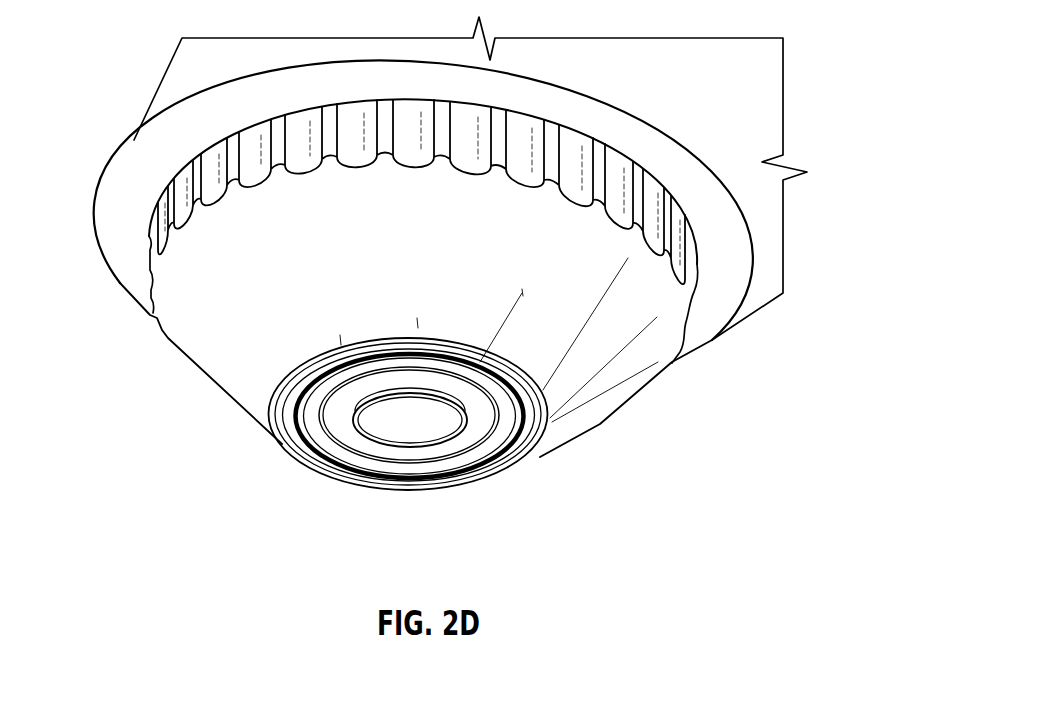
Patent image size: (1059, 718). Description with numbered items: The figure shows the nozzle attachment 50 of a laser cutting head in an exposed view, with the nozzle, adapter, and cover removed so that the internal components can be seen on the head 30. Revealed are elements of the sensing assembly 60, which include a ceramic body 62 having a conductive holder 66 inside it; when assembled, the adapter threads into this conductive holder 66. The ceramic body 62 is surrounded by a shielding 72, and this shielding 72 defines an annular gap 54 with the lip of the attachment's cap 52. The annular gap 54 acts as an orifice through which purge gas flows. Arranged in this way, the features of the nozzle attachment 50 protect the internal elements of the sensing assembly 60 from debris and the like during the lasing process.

The housing 30 is at (735, 260).
The nozzle attachment 50 is at (168, 464).
The cap 52 is at (597, 422).
The annular gap 54 is at (316, 452).
The sensing assembly 60 is at (418, 414).
The ceramic body 62 is at (473, 465).
The conductive holder 66 is at (411, 468).
The shielding 72 is at (524, 455).